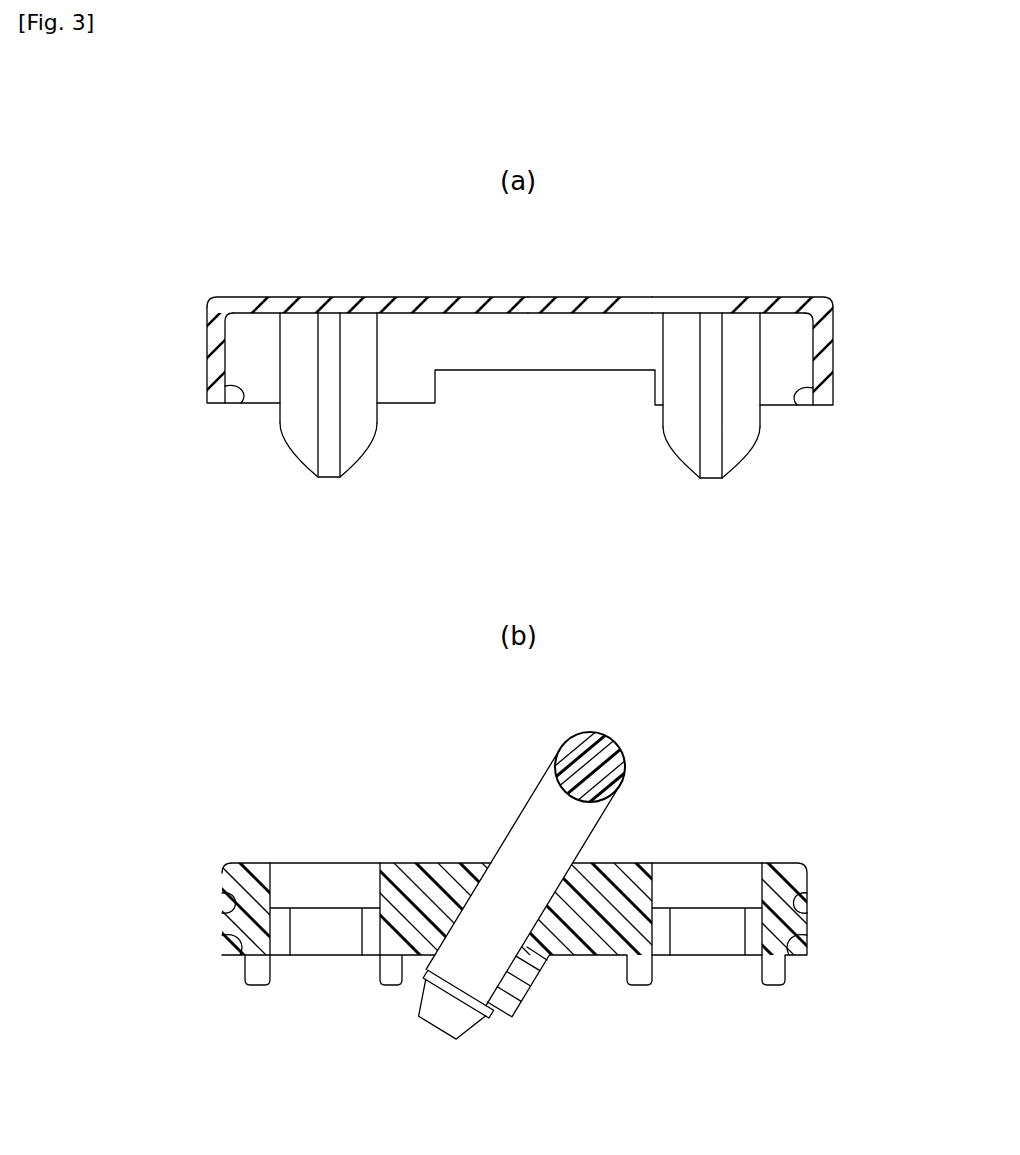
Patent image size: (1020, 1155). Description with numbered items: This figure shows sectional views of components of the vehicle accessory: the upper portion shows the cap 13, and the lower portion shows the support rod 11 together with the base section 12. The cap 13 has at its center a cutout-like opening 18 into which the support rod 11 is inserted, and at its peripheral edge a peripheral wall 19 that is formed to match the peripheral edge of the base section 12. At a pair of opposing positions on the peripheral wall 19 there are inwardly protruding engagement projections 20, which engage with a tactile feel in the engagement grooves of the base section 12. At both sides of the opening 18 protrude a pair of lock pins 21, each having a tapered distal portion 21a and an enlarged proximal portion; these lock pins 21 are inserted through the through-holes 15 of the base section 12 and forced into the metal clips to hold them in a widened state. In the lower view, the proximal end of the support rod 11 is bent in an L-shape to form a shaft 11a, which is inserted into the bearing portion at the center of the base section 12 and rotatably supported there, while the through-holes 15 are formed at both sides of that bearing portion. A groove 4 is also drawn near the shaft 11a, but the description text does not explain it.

The groove 4 is at (481, 1014).
The shaft 11 is at (600, 740).
The shaft tip 11a is at (442, 1018).
The holder body 12 is at (432, 862).
The top plate 13 is at (412, 297).
The recess 15 is at (325, 930).
The thin portion 18 is at (650, 305).
The side wall 19 is at (215, 362).
The groove 20 is at (240, 408).
The leg 21 is at (300, 442).
The leg tip 21a is at (332, 480).